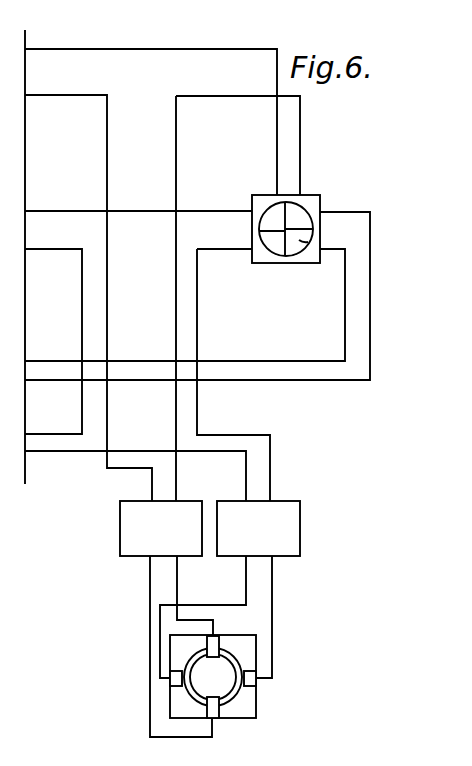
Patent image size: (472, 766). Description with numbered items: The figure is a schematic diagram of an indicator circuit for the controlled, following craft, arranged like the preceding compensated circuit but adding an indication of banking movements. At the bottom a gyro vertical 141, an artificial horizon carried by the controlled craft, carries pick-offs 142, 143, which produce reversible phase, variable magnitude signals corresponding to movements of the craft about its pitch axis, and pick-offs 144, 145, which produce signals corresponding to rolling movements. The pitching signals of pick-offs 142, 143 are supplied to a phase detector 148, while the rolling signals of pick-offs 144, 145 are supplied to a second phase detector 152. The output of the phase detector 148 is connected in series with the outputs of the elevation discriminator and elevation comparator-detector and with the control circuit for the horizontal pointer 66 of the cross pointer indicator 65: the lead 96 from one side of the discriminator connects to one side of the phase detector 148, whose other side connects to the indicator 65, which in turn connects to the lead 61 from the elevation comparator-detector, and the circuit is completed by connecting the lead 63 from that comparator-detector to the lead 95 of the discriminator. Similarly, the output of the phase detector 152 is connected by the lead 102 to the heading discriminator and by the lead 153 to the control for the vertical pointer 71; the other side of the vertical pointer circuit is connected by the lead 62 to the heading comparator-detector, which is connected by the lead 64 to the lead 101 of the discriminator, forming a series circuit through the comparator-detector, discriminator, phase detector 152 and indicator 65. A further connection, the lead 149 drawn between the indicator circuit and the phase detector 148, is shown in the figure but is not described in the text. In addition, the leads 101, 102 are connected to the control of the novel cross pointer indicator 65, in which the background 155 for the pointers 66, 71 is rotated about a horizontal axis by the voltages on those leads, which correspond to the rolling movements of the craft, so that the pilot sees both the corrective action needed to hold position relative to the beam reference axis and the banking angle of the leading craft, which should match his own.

The lead 62 is at (73, 48).
The lead 64 is at (52, 97).
The horizontal pointer 66 is at (275, 199).
The lead 61 is at (61, 211).
The lead 63 is at (50, 251).
The lead 153 is at (176, 324).
The lead 101 is at (55, 352).
The lead 102 is at (50, 382).
The lead 95 is at (67, 432).
The lead 96 is at (55, 453).
The lead 149 is at (200, 411).
The cross pointer indicator 65 is at (306, 194).
The vertical pointer 71 is at (262, 241).
The background 155 is at (303, 240).
The phase detector 152 is at (120, 514).
The phase detector 148 is at (302, 503).
The gyro vertical 141 is at (253, 650).
The pick-off 144 is at (208, 644).
The pick-off 145 is at (216, 716).
The pick-off 142 is at (176, 682).
The pick-off 143 is at (258, 682).